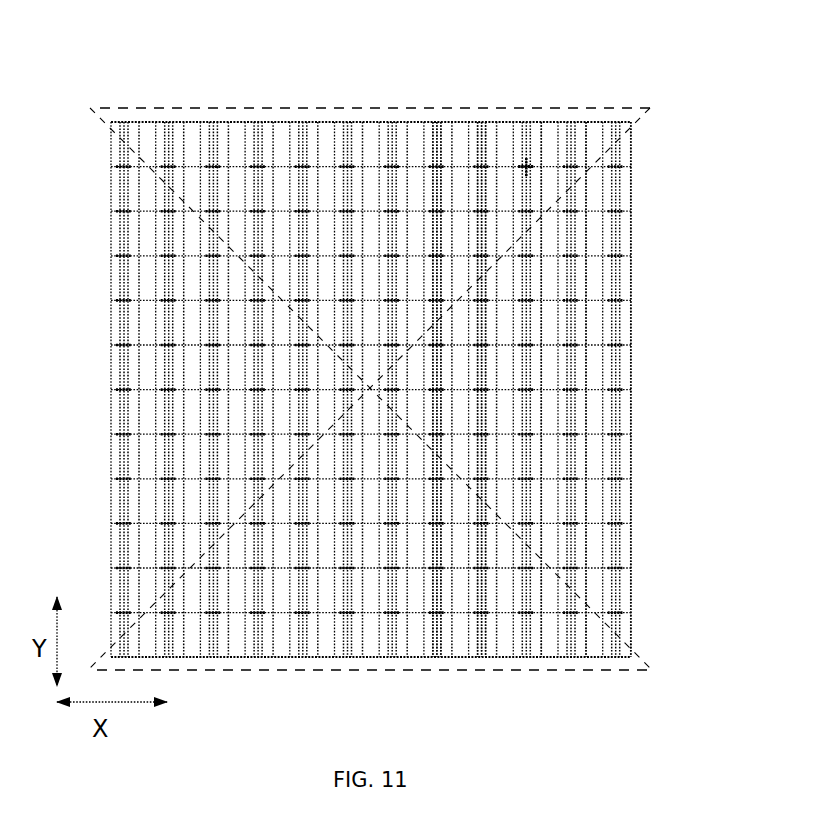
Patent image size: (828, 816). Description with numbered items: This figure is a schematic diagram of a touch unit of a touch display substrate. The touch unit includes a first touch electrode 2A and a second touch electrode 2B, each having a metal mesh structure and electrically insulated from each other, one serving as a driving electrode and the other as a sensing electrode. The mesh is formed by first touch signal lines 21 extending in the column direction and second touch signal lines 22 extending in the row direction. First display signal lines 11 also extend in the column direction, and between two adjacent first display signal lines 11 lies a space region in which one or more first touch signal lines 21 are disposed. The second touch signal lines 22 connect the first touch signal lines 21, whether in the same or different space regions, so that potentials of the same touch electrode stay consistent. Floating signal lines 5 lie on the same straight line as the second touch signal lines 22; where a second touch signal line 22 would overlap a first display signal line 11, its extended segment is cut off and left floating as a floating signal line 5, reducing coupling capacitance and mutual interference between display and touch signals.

The first touch electrode 2A is at (362, 110).
The second touch electrode 2B is at (638, 340).
The first display signal line 11 is at (487, 122).
The first touch signal line 21 is at (427, 122).
The second touch signal line 22 is at (533, 122).
The floating signal line 5 is at (532, 167).